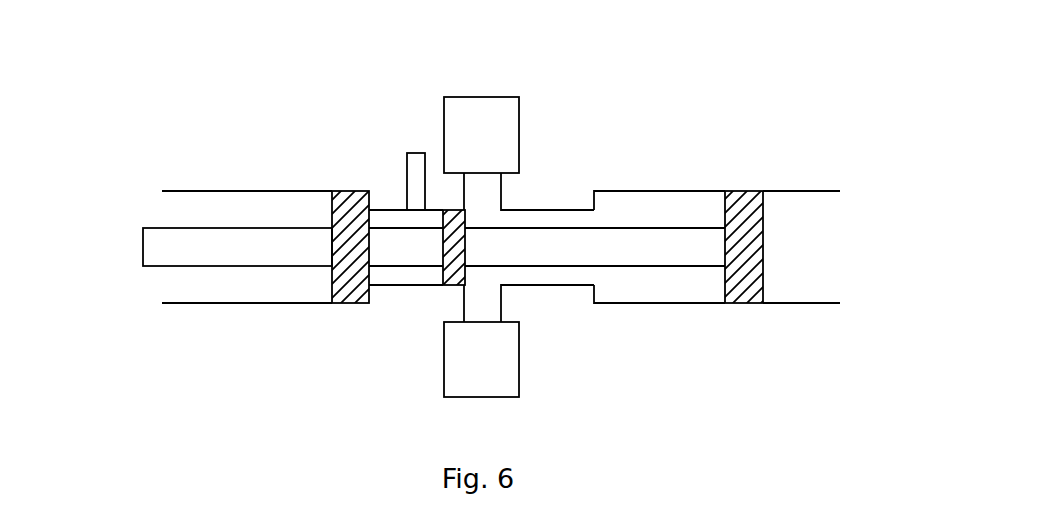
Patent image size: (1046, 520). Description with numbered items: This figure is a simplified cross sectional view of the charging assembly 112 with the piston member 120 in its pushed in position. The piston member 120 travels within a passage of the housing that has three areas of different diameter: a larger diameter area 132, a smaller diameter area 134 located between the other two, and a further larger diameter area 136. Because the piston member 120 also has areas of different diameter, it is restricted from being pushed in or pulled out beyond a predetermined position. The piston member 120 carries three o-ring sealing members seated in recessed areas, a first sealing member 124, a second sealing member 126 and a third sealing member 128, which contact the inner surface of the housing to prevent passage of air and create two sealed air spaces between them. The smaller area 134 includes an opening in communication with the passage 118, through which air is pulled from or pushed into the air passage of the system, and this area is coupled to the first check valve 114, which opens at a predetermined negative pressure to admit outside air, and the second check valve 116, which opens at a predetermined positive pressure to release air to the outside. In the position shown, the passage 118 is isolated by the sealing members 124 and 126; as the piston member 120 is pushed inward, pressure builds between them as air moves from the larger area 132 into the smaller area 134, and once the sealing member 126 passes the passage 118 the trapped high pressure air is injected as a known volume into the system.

The charging assembly 112 is at (687, 68).
The first check valve 114 is at (500, 115).
The second check valve 116 is at (500, 377).
The passage 118 is at (407, 153).
The piston member 120 is at (136, 297).
The first sealing member 124 is at (340, 190).
The second sealing member 126 is at (445, 210).
The third sealing member 128 is at (723, 210).
The area 132 is at (275, 303).
The area 134 is at (445, 284).
The area 136 is at (745, 303).